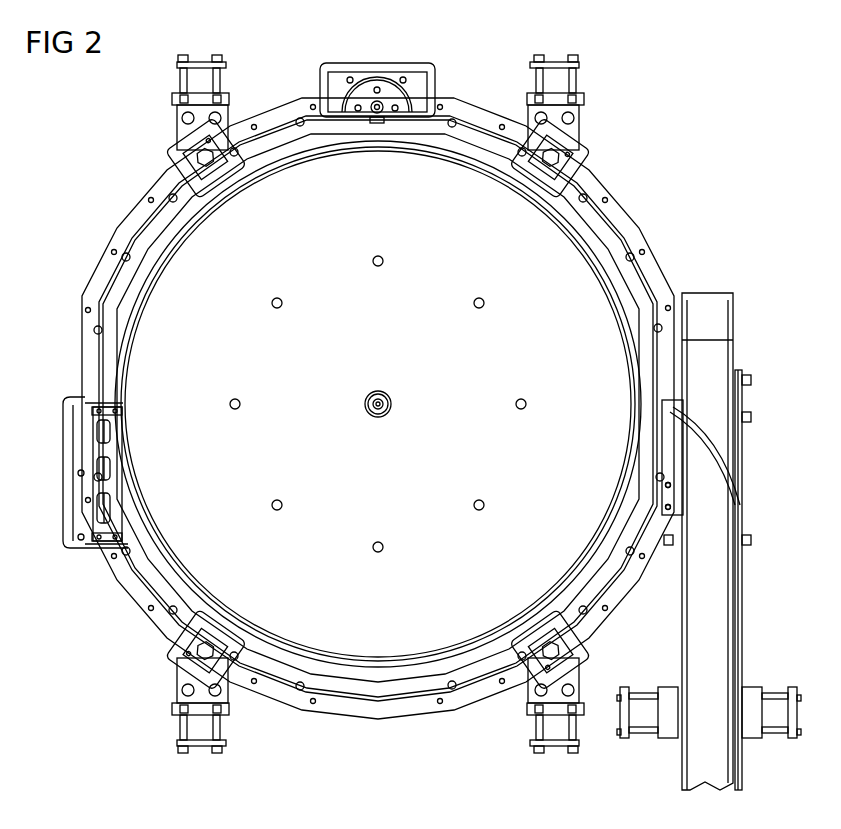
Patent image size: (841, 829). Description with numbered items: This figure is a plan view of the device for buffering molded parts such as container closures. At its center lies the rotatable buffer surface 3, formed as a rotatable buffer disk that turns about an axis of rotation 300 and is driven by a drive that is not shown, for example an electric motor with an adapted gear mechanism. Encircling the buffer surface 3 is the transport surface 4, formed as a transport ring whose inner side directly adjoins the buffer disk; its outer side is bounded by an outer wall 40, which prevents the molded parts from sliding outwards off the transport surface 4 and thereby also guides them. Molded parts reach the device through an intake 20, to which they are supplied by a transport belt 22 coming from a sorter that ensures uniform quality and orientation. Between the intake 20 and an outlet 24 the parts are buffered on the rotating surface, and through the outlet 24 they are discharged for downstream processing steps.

The rotatable buffer surface 3 is at (572, 246).
The transport surface 4 is at (487, 153).
The outer wall 40 is at (262, 143).
The axis of rotation 300 is at (392, 404).
The intake 20 is at (673, 440).
The transport belt 22 is at (735, 620).
The outlet 24 is at (100, 512).